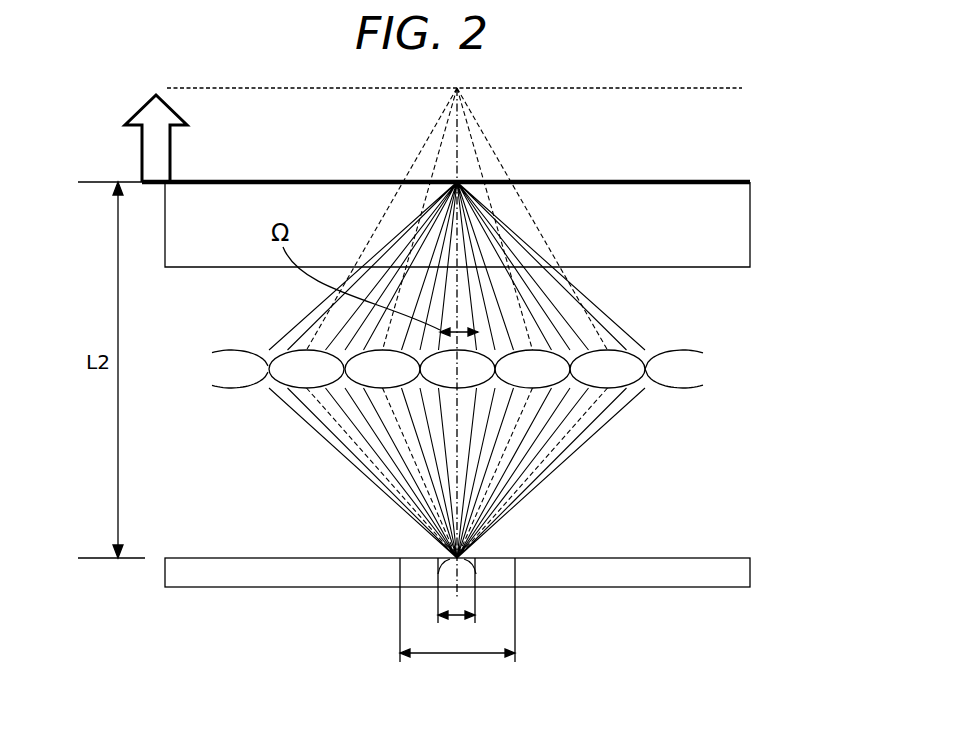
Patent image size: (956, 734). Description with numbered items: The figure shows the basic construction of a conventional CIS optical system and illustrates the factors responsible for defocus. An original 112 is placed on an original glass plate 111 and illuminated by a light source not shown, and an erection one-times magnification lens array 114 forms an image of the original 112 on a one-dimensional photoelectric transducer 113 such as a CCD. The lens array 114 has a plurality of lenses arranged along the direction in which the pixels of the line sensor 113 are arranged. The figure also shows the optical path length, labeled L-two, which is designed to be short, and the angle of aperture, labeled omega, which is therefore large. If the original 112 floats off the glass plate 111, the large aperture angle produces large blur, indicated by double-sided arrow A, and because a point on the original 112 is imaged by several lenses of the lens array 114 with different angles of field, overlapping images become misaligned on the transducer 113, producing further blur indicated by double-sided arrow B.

The original glass plate 111 is at (727, 250).
The original 112 is at (733, 180).
The one-dimensional photoelectric transducer (line sensor) 113 is at (687, 560).
The erection 1× magnification lens array 114 is at (235, 374).